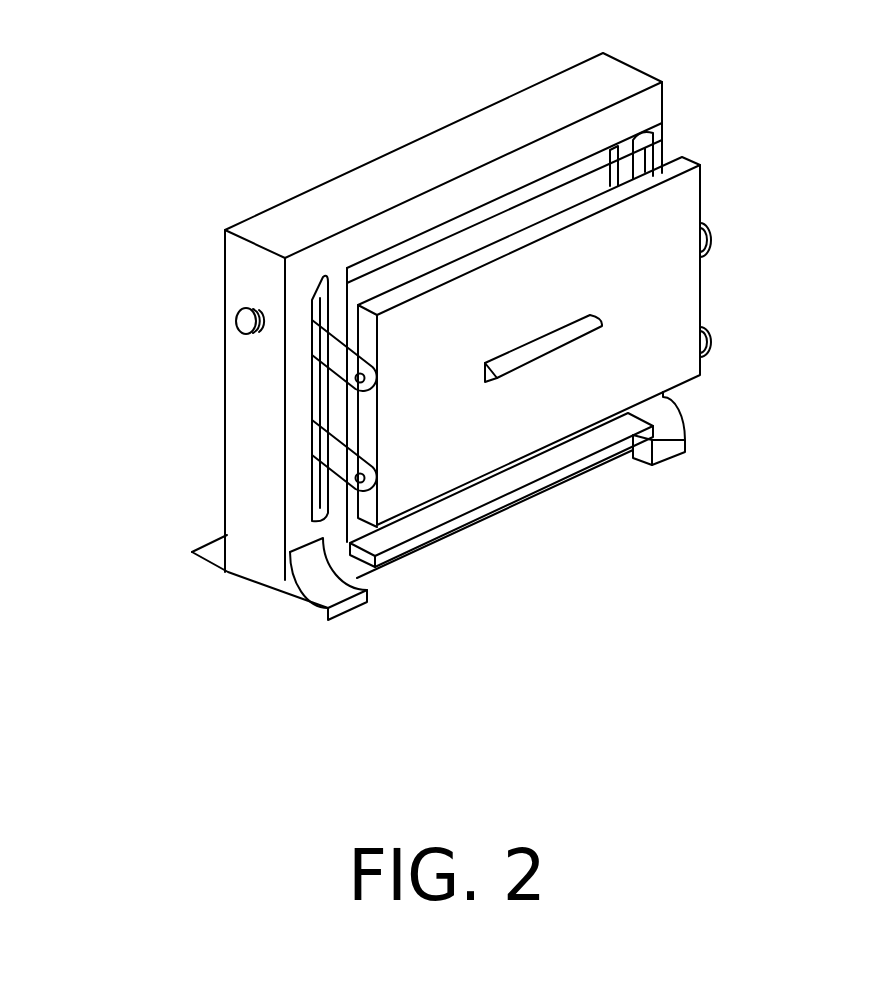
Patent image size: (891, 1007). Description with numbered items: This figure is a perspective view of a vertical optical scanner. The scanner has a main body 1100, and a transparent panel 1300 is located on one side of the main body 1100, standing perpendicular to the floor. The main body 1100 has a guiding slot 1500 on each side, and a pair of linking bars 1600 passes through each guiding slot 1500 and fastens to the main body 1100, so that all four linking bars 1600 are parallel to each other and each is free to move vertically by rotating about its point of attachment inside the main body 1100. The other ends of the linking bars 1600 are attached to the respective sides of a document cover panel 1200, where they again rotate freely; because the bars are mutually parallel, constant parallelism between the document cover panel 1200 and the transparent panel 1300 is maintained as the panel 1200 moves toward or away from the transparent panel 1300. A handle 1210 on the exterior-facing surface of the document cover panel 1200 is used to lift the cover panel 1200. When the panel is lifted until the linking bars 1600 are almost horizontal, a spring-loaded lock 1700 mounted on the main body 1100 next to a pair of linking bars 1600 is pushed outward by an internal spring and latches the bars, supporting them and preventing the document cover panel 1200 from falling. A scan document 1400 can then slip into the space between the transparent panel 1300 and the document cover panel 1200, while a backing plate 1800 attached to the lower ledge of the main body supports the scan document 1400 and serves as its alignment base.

The main body 1100 is at (422, 147).
The document cover panel 1200 is at (687, 203).
The handle 1210 is at (582, 333).
The transparent panel 1300 is at (602, 155).
The scan document 1400 is at (403, 277).
The guiding slot 1500 is at (311, 296).
The linking bars 1600 is at (330, 362).
The spring-loaded lock 1700 is at (237, 324).
The backing plate 1800 is at (542, 487).